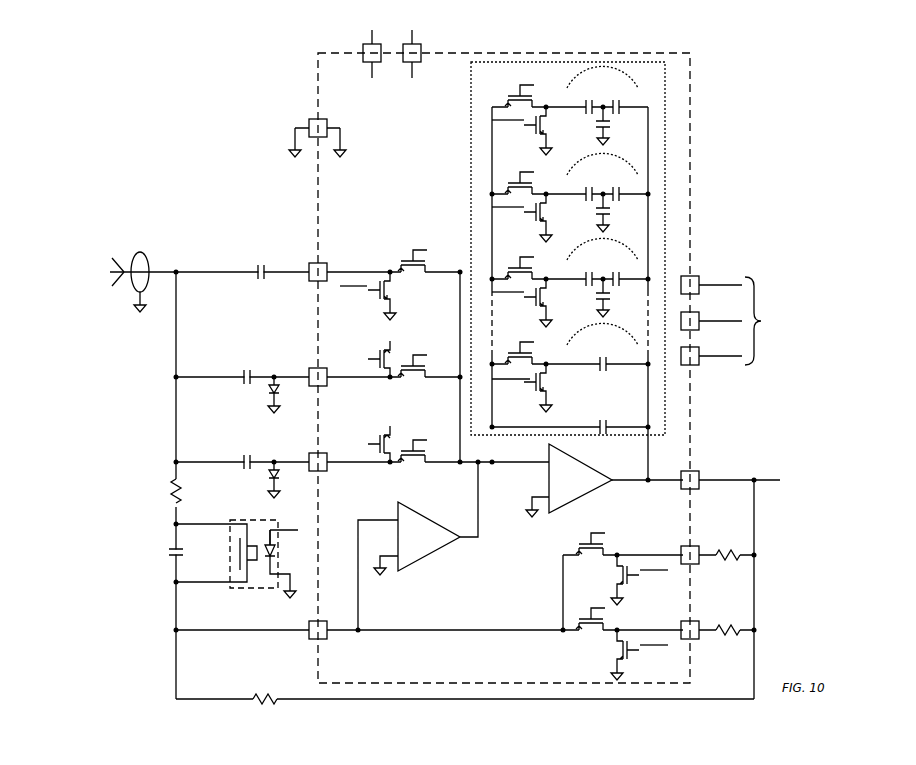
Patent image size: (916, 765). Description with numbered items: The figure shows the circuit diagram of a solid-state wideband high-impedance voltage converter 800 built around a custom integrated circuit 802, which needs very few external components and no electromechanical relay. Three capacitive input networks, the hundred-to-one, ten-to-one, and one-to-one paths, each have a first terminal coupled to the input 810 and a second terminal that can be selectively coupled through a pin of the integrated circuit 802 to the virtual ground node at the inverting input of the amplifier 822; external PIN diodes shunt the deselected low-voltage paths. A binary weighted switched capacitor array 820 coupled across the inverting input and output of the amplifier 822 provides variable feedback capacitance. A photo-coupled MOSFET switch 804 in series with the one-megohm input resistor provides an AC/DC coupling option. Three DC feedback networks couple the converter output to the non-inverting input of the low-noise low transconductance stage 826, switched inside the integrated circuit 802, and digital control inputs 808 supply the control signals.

The solid-state wideband high-impedance voltage converter 800 is at (831, 125).
The custom integrated circuit 802 is at (394, 201).
The photo-coupled MOSFET switch 804 is at (237, 591).
The digital control inputs 808 is at (756, 320).
The input 810 is at (141, 251).
The binary weighted switched capacitor array 820 is at (665, 84).
The amplifier 822 is at (585, 496).
The low-noise low transconductance stage 826 is at (435, 552).